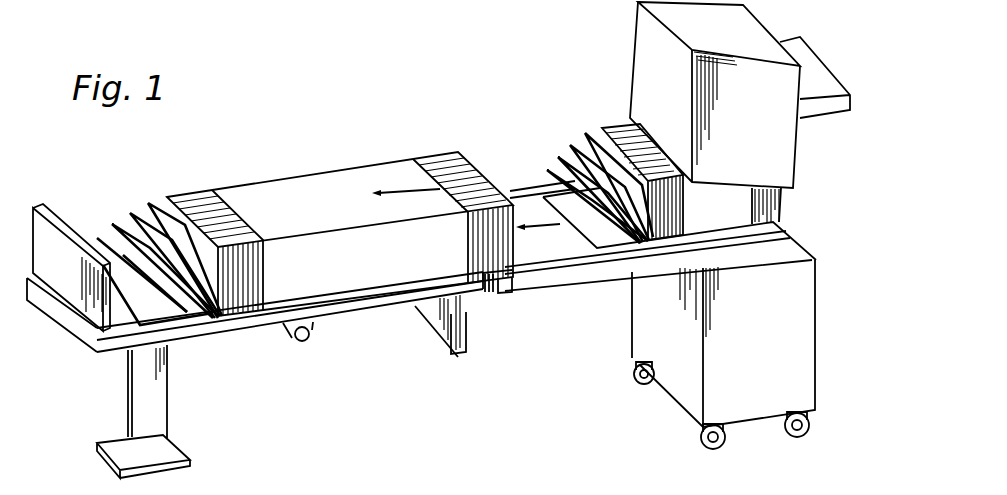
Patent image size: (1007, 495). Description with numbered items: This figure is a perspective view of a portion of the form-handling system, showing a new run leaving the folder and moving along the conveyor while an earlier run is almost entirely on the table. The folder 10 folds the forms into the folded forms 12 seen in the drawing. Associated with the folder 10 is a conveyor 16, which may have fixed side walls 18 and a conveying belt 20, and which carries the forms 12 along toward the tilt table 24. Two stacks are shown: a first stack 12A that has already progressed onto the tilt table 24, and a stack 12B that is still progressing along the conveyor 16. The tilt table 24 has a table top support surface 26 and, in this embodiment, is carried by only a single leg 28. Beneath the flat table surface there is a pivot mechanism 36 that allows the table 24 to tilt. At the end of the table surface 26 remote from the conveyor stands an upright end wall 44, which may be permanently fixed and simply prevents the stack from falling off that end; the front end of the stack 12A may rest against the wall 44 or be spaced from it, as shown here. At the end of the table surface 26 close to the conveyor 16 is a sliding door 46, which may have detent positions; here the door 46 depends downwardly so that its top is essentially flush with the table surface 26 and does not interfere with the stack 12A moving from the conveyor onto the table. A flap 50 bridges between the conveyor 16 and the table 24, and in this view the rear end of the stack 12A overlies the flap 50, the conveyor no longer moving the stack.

The folder 10 is at (807, 131).
The folded forms 12 is at (576, 118).
The first stack 12A is at (333, 165).
The stack 12B is at (611, 120).
The conveyor 16 is at (560, 290).
The fixed side walls 18 is at (591, 268).
The conveying belt 20 is at (525, 192).
The tilt table 24 is at (355, 316).
The table top support surface 26 is at (127, 329).
The leg 28 is at (133, 387).
The pivot mechanism 36 is at (291, 343).
The upright end wall 44 is at (58, 220).
The sliding door 46 is at (441, 328).
The flap 50 is at (497, 279).